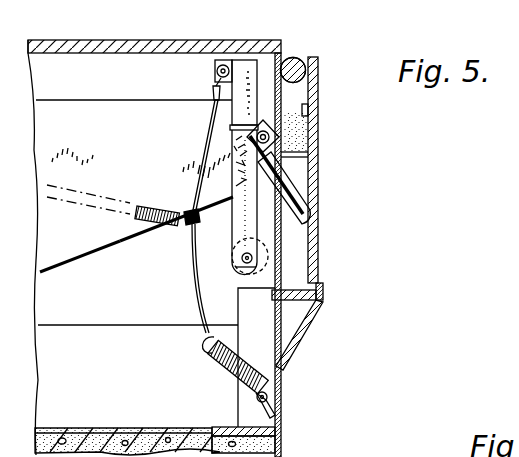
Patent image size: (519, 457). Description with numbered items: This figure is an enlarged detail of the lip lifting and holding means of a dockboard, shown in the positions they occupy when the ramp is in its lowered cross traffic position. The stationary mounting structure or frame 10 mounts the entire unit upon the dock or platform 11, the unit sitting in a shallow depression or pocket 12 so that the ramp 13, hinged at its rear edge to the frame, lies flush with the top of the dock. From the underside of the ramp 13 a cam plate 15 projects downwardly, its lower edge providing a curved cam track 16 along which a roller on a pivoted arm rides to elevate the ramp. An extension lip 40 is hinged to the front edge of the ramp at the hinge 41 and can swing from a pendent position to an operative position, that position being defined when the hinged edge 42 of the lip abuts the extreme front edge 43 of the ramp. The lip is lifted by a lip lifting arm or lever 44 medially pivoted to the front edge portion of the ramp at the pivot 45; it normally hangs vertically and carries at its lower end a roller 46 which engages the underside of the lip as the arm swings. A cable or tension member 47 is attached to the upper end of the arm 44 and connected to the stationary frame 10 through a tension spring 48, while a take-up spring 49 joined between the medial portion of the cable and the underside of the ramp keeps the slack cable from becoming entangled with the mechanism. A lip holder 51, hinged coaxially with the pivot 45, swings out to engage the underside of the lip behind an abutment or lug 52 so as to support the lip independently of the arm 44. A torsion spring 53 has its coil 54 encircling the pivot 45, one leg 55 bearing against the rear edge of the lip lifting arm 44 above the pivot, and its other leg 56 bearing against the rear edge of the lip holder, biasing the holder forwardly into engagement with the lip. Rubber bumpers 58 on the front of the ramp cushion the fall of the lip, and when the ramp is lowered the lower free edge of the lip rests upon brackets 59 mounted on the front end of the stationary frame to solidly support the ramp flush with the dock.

The stationary mounting structure or frame 10 is at (81, 407).
The dock or platform 11 is at (289, 450).
The depression or pocket 12 is at (116, 430).
The ramp 13 is at (138, 41).
The cam plate 15 is at (74, 247).
The cam track 16 is at (116, 248).
The extension lip 40 is at (317, 153).
The hinge of extension lip 41 is at (299, 57).
The hinged edge of lip 42 is at (315, 57).
The extreme front edge of ramp 43 is at (297, 57).
The lip lifting arm or lever 44 is at (245, 227).
The pivot 45 is at (256, 138).
The roller 46 is at (250, 272).
The cable or tension member 47 is at (195, 267).
The tension spring 48 is at (221, 366).
The take-up spring 49 is at (144, 205).
The lip holder 51 is at (295, 195).
The abutment or lug 52 is at (299, 106).
The torsion spring 53 is at (237, 168).
The coil 54 is at (242, 185).
The leg of torsion spring 55 is at (242, 124).
The other leg of torsion spring 56 is at (302, 172).
The rubber bumpers 58 is at (300, 133).
The brackets 59 is at (325, 303).